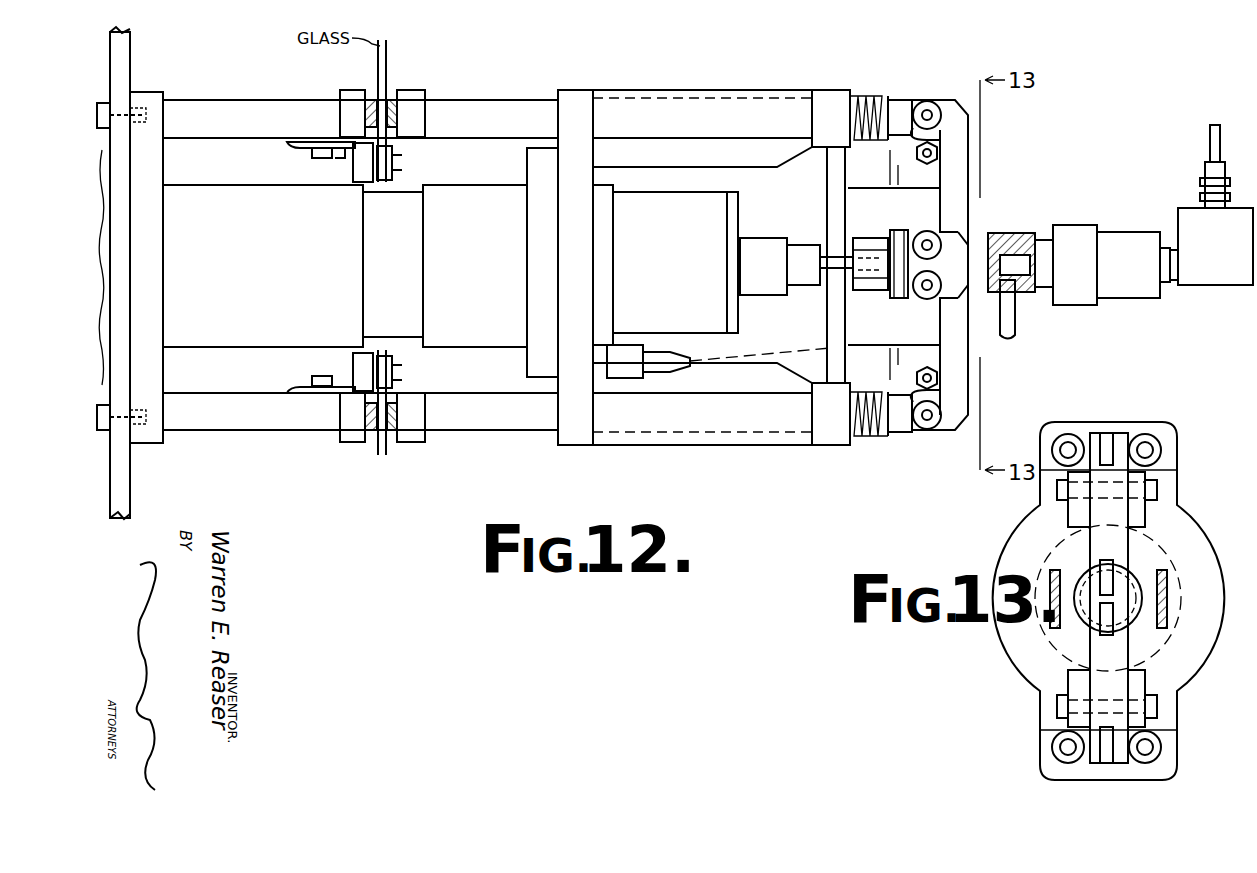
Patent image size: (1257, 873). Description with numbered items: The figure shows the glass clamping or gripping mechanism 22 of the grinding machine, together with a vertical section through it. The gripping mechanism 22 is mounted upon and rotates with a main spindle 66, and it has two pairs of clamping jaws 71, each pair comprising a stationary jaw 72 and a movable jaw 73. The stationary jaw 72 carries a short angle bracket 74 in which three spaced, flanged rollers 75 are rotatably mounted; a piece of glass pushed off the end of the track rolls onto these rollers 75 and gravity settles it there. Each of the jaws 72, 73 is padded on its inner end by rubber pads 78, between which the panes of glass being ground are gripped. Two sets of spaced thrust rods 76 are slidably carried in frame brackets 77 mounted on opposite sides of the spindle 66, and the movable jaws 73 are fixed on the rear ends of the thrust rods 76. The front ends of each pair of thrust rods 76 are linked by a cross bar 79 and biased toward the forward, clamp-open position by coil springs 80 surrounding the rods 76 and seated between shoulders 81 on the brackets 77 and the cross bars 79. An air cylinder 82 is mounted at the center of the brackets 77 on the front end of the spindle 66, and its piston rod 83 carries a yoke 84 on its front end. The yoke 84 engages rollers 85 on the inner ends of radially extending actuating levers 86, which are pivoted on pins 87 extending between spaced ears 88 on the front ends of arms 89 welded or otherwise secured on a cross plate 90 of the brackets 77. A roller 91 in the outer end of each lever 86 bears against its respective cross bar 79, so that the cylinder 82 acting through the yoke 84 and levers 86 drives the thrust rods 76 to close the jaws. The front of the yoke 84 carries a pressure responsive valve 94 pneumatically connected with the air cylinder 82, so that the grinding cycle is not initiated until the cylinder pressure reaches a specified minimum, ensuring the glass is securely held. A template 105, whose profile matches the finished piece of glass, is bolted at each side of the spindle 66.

In FIG. 12, the template 105 is at (130, 70).
In FIG. 12, the main spindle 66 is at (278, 185).
In FIG. 12, the clamping jaws 71 is at (415, 90).
In FIG. 12, the stationary jaw 72 is at (352, 82).
In FIG. 12, the movable jaw 73 is at (430, 100).
In FIG. 12, the angle bracket 74 is at (330, 160).
In FIG. 12, the flanged rollers 75 is at (393, 150).
In FIG. 12, the thrust rods 76 is at (495, 100).
In FIG. 12, the frame brackets 77 is at (576, 90).
In FIG. 12, the rubber pads 78 is at (372, 92).
In FIG. 12, the cross bar 79 is at (900, 100).
In FIG. 13, the cross bar 79 is at (1100, 433).
In FIG. 12, the coil springs 80 is at (870, 96).
In FIG. 12, the shoulders 81 is at (832, 90).
In FIG. 12, the air cylinder 82 is at (740, 222).
In FIG. 12, the piston rod 83 is at (850, 244).
In FIG. 12, the yoke 84 is at (900, 215).
In FIG. 13, the yoke 84 is at (1048, 612).
In FIG. 12, the rollers 85 is at (932, 230).
In FIG. 13, the rollers 85 is at (1100, 575).
In FIG. 12, the actuating levers 86 is at (968, 190).
In FIG. 13, the actuating levers 86 is at (1150, 545).
In FIG. 12, the pins 87 is at (940, 153).
In FIG. 13, the pins 87 is at (1160, 475).
In FIG. 12, the ears 88 is at (935, 140).
In FIG. 13, the ears 88 is at (1068, 505).
In FIG. 12, the arms 89 is at (900, 188).
In FIG. 13, the arms 89 is at (1150, 500).
In FIG. 12, the cross plate 90 is at (820, 318).
In FIG. 12, the roller 91 is at (940, 90).
In FIG. 13, the roller 91 is at (1113, 440).
In FIG. 12, the pressure responsive valve 94 is at (1100, 232).
In FIG. 12, the gripping mechanism 22 is at (715, 452).